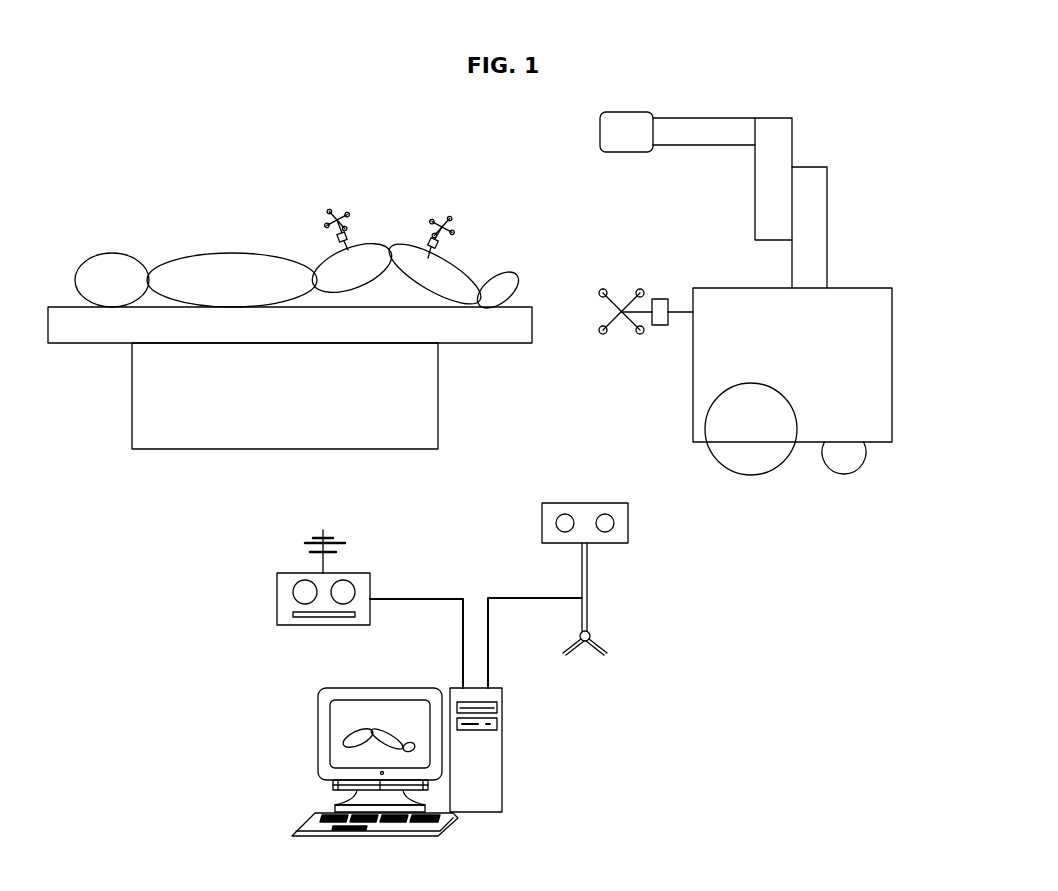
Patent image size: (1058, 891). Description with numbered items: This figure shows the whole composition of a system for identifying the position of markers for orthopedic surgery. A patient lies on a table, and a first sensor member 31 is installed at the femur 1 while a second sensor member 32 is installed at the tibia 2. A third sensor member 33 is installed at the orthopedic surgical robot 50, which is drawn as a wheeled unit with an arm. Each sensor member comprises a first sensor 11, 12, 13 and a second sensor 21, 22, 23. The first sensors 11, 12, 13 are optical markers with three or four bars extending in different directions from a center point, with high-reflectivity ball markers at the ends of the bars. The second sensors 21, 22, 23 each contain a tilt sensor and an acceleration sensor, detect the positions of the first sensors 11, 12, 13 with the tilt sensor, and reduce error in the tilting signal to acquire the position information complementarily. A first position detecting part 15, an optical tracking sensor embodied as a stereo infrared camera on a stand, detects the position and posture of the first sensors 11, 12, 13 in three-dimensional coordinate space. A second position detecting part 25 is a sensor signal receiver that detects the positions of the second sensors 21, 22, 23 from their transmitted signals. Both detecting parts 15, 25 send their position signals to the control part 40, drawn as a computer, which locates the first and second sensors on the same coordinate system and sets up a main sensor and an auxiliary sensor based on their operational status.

The femur 1 is at (330, 267).
The tibia 2 is at (465, 268).
The first sensor 11 is at (340, 216).
The first sensor 12 is at (440, 221).
The first sensor 13 is at (628, 322).
The first position detecting part 15 is at (628, 523).
The second sensor 21 is at (347, 236).
The second sensor 22 is at (441, 241).
The second sensor 23 is at (658, 298).
The second position detecting part 25 is at (277, 598).
The first sensor member 31 is at (308, 175).
The second sensor member 32 is at (476, 181).
The third sensor member 33 is at (597, 253).
The control part 40 is at (502, 764).
The orthopedic surgical robot 50 is at (892, 375).